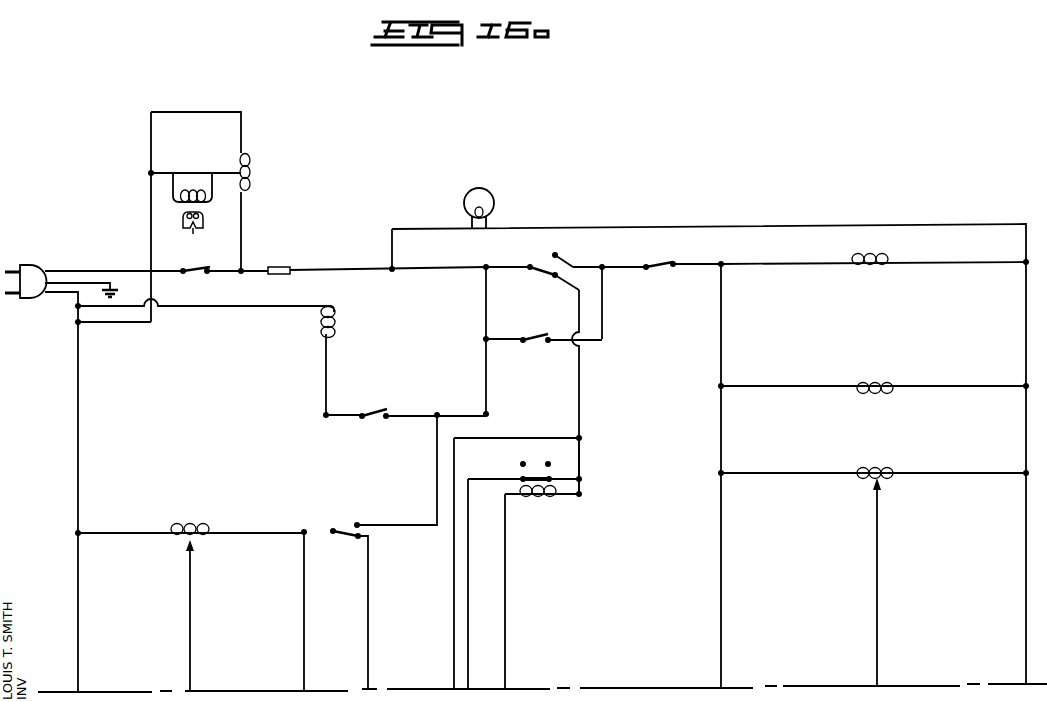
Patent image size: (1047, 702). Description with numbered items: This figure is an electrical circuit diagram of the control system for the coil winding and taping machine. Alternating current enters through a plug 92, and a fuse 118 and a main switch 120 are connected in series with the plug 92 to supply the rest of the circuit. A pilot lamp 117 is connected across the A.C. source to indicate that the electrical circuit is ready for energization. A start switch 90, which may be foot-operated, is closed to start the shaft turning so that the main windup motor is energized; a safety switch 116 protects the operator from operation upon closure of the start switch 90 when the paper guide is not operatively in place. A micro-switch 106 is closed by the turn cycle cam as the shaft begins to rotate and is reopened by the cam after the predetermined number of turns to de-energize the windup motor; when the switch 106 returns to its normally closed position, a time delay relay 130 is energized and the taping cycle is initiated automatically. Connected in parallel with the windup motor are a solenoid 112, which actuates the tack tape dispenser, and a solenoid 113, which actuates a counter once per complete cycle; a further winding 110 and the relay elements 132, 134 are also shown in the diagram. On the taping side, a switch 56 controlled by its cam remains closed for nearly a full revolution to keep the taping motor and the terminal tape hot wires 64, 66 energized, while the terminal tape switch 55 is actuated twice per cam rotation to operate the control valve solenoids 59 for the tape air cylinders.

The plug 92 is at (26, 295).
The terminal tape hot wire 64 is at (194, 214).
The terminal tape hot wire 66 is at (193, 223).
The main switch 120 is at (196, 282).
The fuse 118 is at (284, 262).
The pilot lamp 117 is at (497, 203).
The micro-switch 106 is at (551, 266).
The safety switch 116 is at (660, 275).
The solenoid 112 is at (869, 274).
The solenoid 113 is at (875, 378).
The solenoid coil 110 is at (877, 463).
The control valve solenoid 59 is at (340, 322).
The start switch 90 is at (535, 350).
The terminal tape switch 55 is at (373, 427).
The switch 56 is at (266, 523).
The relay contacts 134 is at (537, 462).
The relay coil 132 is at (538, 505).
The time delay relay 130 is at (614, 470).